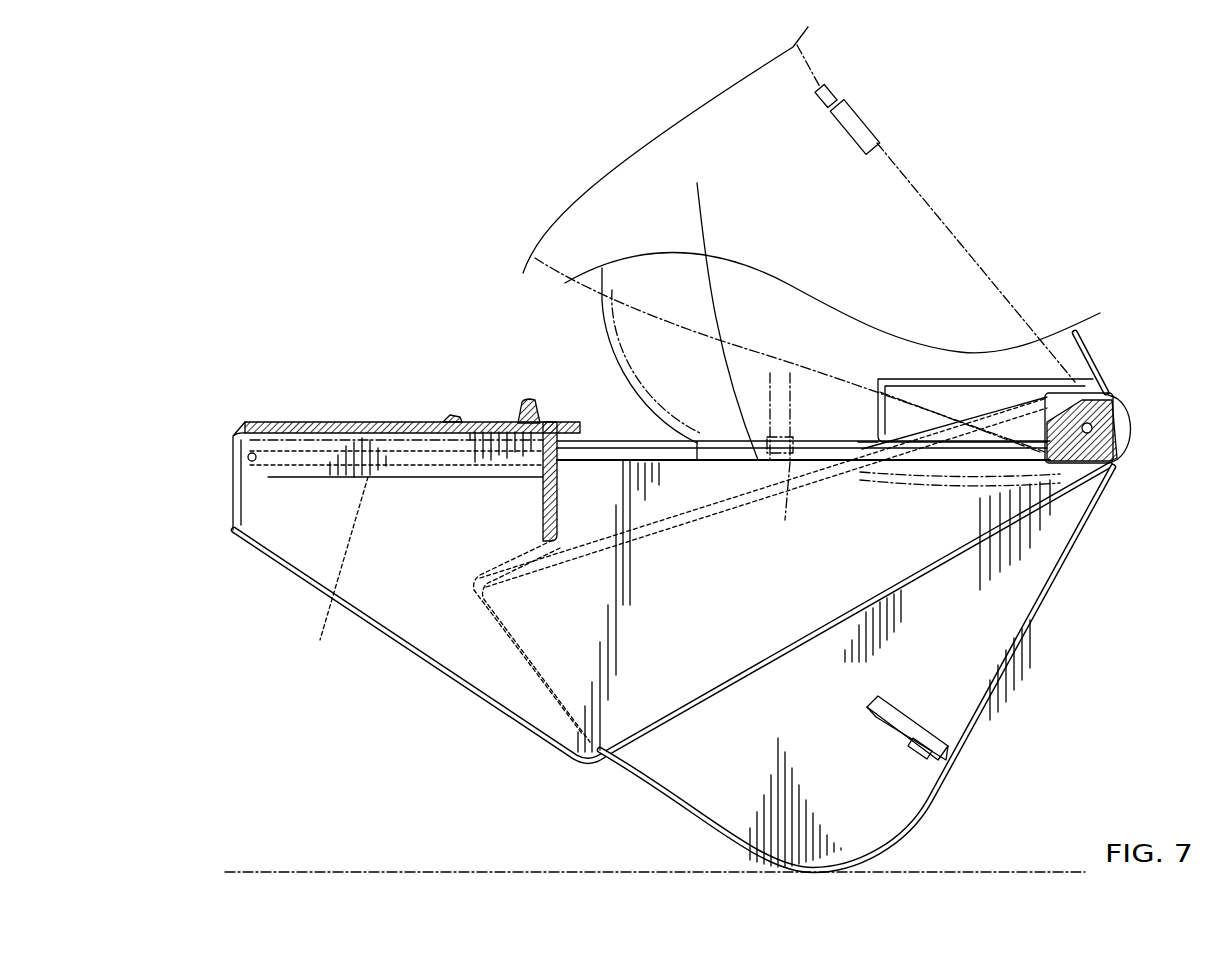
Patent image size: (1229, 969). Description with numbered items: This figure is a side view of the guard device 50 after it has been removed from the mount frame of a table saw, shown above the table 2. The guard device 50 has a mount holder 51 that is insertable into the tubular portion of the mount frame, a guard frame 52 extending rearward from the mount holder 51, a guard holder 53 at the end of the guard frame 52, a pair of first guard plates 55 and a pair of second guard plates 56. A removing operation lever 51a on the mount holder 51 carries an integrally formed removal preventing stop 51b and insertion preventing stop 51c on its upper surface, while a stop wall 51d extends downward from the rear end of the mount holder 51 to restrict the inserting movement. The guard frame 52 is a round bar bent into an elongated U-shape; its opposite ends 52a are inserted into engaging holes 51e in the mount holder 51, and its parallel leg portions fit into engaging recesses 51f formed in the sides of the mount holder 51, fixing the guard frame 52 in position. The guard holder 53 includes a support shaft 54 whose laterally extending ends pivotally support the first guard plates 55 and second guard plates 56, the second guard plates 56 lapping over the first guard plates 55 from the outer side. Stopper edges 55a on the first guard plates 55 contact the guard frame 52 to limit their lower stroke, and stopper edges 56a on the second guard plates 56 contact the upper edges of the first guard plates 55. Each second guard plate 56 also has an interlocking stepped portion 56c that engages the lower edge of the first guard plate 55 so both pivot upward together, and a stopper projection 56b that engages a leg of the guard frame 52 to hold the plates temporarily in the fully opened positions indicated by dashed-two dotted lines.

The table 2 is at (1020, 872).
The guard device 50 is at (475, 300).
The mount holder 51 is at (290, 420).
The removing operation lever 51a is at (497, 413).
The removal preventing stop 51b is at (450, 420).
The insertion preventing stop 51c is at (478, 417).
The stop wall 51d is at (547, 500).
The engaging holes 51e is at (240, 432).
The engaging recesses 51f is at (333, 574).
The guard frame 52 is at (1003, 377).
The opposite ends of the guard frame 52a is at (252, 463).
The guard holder 53 is at (1126, 422).
The support shaft 54 is at (1092, 410).
The first guard plates 55 is at (603, 227).
The stopper edges 55a is at (936, 107).
The second guard plates 56 is at (750, 295).
The stopper edges 56a is at (963, 457).
The stopper projection 56b is at (790, 470).
The interlocking stepped portion 56c is at (792, 373).